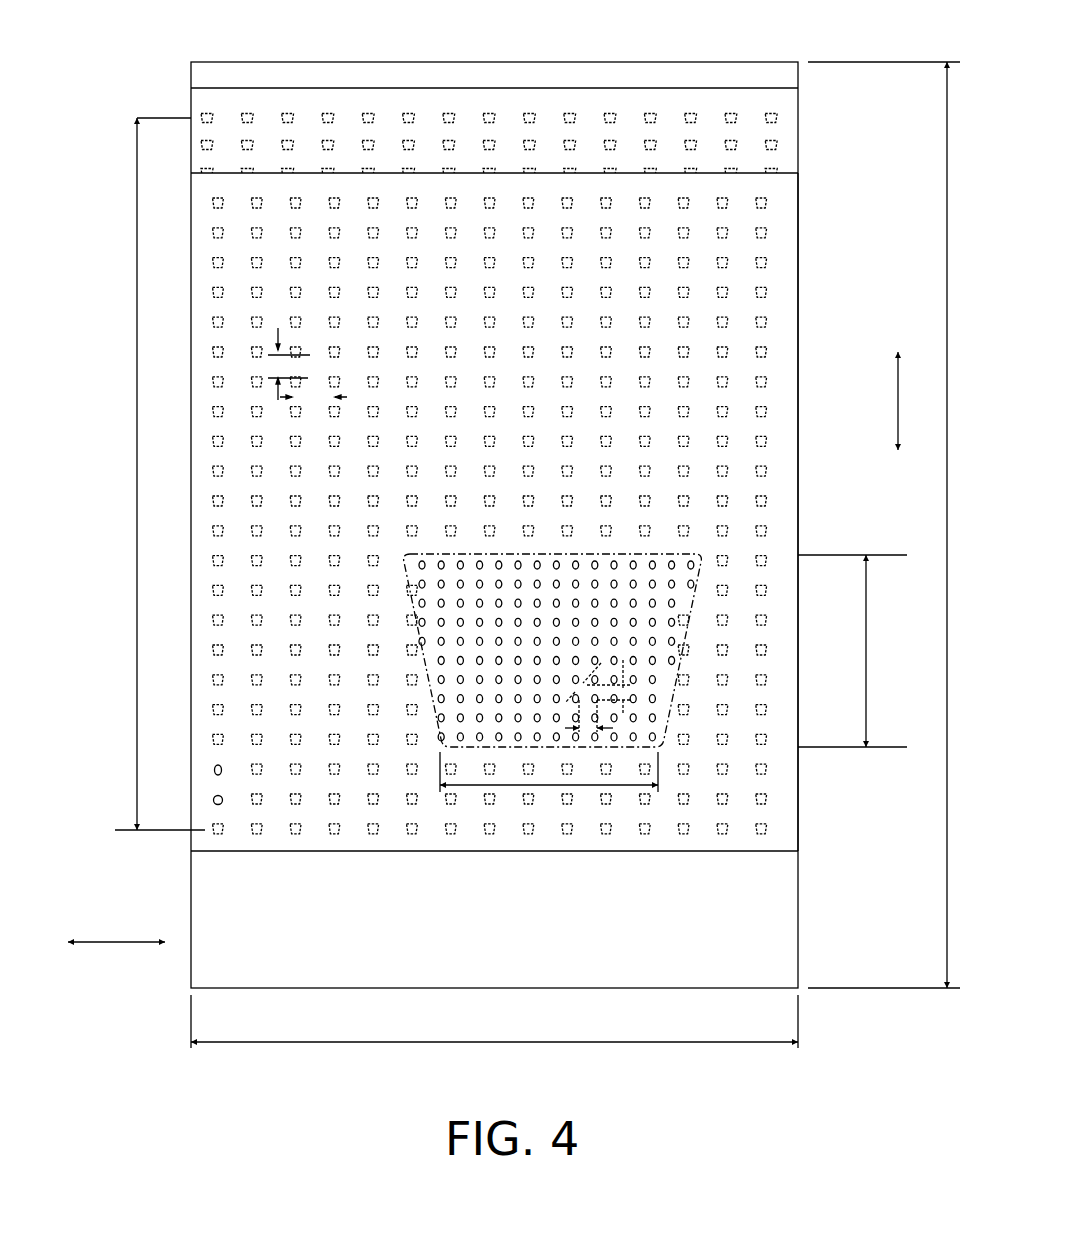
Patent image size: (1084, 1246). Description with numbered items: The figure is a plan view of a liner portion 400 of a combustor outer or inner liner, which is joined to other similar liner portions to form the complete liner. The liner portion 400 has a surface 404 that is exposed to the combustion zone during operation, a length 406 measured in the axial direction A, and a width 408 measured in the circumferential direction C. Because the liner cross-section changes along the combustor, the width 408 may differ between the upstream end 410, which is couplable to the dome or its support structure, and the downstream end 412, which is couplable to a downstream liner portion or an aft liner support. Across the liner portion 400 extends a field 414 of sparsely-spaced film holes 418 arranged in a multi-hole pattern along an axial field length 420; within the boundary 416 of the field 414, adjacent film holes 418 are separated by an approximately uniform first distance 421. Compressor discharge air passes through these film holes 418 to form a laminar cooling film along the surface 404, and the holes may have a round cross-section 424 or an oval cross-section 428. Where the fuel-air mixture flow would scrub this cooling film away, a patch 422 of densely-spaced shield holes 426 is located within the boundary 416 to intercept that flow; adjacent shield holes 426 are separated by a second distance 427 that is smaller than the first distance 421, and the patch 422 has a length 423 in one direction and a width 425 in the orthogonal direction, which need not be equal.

The liner portion 400 is at (118, 125).
The downstream end 412 is at (176, 14).
The field 414 is at (158, 302).
The boundary 416 is at (800, 472).
The sparsely-spaced film holes 418 is at (570, 290).
The axial field length 420 is at (137, 468).
The first distance 421 is at (278, 335).
The patch 422 is at (396, 718).
The length 423 is at (868, 630).
The round cross-section 424 is at (210, 800).
The width 425 is at (548, 788).
The densely-spaced shield holes 426 is at (440, 630).
The second distance 427 is at (543, 720).
The oval cross-section 428 is at (212, 770).
The surface 404 is at (735, 808).
The length 406 is at (945, 152).
The width 408 is at (692, 1043).
The upstream end 410 is at (213, 1062).
The axial direction A is at (895, 402).
The circumferential direction C is at (122, 940).